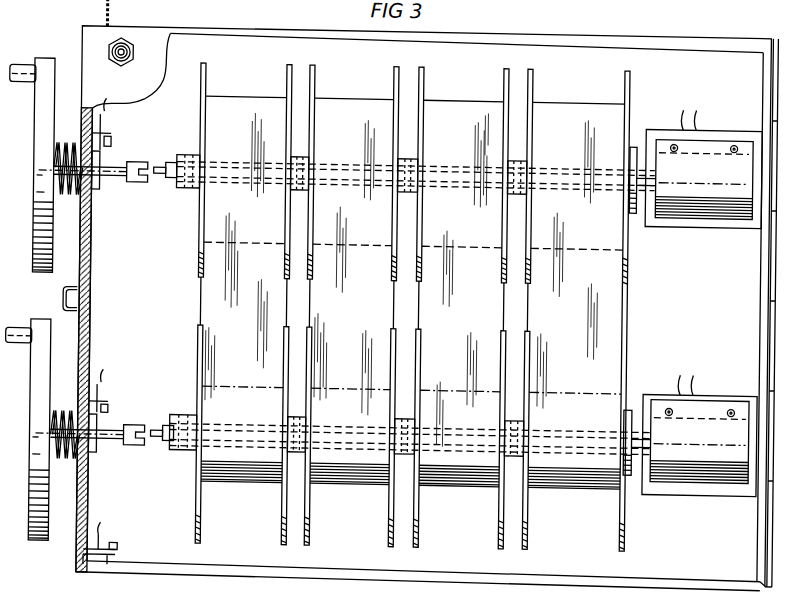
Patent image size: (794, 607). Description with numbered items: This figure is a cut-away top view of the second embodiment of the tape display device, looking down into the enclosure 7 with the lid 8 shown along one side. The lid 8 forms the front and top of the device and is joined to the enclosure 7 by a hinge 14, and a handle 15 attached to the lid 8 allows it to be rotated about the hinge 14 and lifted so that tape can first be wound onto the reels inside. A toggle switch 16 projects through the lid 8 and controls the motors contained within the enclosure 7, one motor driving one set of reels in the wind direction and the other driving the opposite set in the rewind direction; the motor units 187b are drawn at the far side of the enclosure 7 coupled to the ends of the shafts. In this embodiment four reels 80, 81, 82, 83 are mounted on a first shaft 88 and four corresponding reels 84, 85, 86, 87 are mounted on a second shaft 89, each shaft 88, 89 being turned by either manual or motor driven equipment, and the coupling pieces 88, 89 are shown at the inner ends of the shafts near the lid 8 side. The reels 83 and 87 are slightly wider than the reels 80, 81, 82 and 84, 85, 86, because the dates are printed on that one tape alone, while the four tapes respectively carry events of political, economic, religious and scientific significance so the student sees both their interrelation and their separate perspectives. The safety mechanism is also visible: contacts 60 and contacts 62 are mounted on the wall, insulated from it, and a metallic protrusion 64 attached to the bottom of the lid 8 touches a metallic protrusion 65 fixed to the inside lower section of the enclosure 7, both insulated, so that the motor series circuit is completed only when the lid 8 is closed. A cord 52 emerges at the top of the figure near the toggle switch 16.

The enclosure 7 is at (457, 581).
The lid 8 is at (76, 551).
The hinge 14 is at (769, 580).
The handle 15 is at (66, 297).
The toggle switch 16 is at (118, 66).
The cord 52 is at (109, 9).
The contacts 60 is at (110, 149).
The contacts 62 is at (110, 412).
The metallic protrusion 64 is at (115, 546).
The metallic protrusion 65 is at (123, 555).
The reel 80 is at (204, 72).
The reel 81 is at (313, 73).
The reel 82 is at (421, 75).
The reel 83 is at (530, 76).
The reel 84 is at (203, 333).
The reel 85 is at (312, 333).
The reel 86 is at (421, 334).
The reel 87 is at (530, 334).
The shaft 88 is at (155, 176).
The shaft 89 is at (155, 442).
The drive motor 187b is at (603, 418).